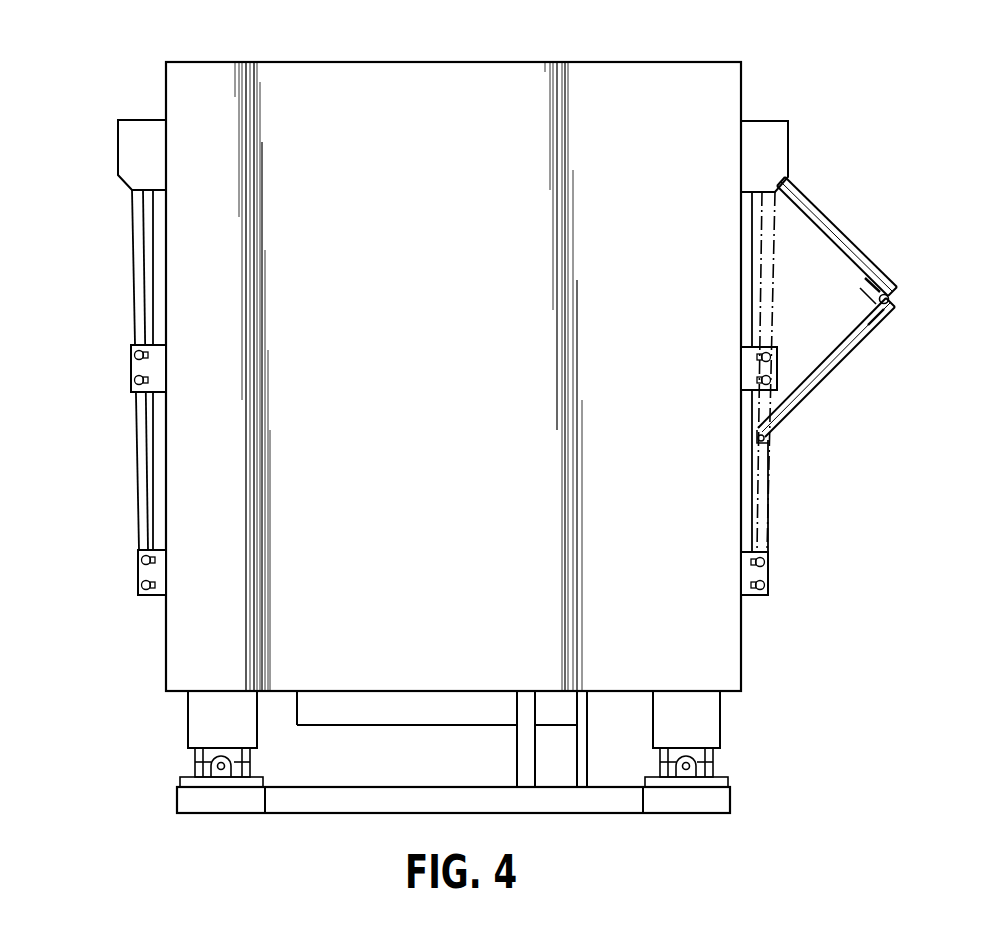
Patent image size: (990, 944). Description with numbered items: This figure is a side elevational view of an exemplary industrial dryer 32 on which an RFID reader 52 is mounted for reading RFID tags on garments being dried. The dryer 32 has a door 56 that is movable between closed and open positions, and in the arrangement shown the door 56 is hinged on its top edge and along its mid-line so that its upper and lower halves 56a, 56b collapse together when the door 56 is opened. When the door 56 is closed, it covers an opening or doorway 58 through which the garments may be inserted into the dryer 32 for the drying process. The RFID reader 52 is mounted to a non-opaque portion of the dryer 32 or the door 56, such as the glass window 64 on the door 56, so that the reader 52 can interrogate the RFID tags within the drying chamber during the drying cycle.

The dryer 32 is at (160, 81).
The door 56 is at (861, 276).
The upper half of the door 56a is at (875, 274).
The lower half of the door 56b is at (880, 326).
The glass window 64 is at (860, 330).
The RFID reader 52 is at (861, 370).
The opening or doorway 58 is at (788, 494).